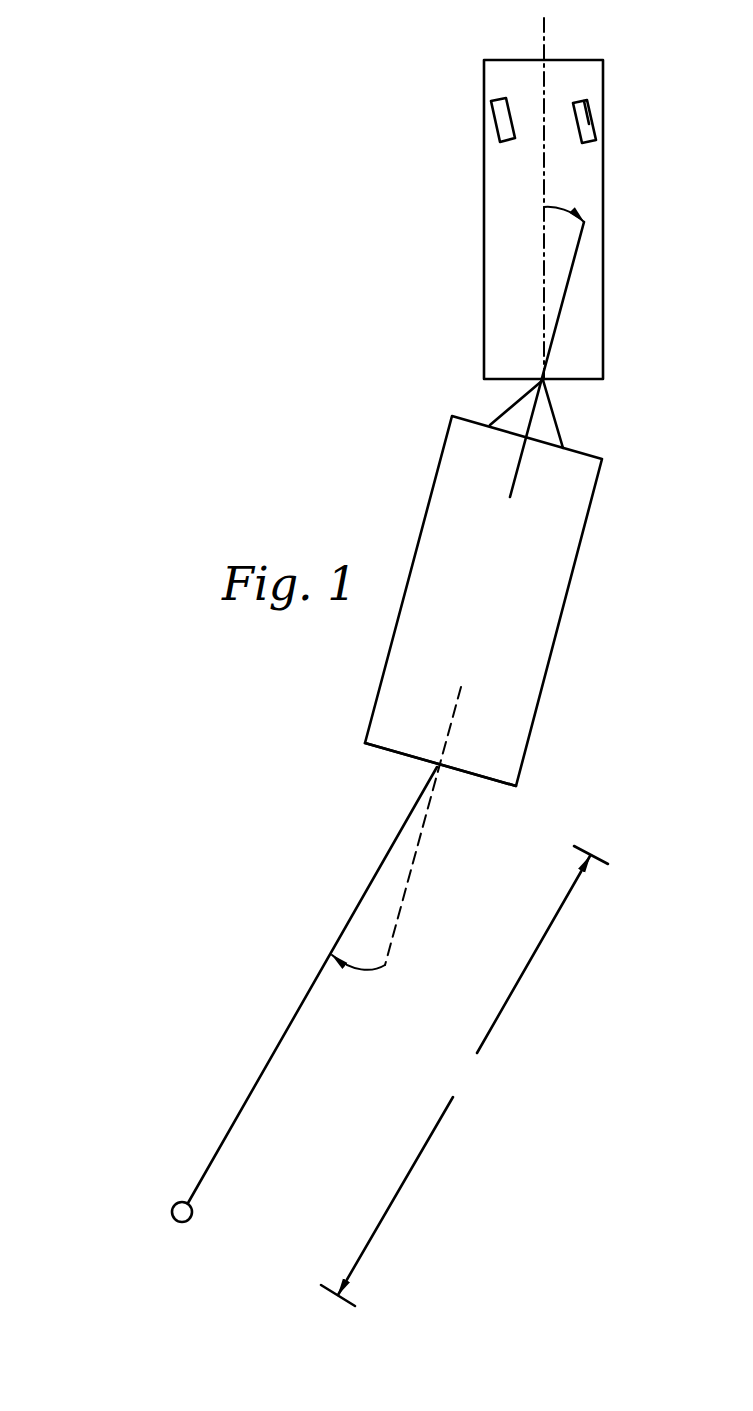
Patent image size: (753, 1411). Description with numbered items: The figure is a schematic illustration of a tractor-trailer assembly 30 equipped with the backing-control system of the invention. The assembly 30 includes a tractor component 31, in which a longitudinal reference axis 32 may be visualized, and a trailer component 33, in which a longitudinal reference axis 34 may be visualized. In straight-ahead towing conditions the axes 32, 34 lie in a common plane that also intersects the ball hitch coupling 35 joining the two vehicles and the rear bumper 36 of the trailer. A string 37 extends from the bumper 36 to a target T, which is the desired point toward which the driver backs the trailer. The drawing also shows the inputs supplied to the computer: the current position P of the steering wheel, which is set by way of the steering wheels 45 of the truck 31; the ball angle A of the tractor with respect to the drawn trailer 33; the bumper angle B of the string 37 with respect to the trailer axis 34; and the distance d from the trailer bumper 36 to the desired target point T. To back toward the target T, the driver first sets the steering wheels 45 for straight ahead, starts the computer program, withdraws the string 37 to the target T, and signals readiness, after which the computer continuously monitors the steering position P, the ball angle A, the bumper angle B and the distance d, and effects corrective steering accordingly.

The tractor-trailer assembly 30 is at (393, 425).
The tractor component 31 is at (603, 276).
The longitudinal reference axis 32 is at (544, 33).
The trailer component 33 is at (560, 622).
The longitudinal reference axis 34 is at (423, 833).
The ball hitch coupling 35 is at (545, 384).
The rear bumper 36 is at (393, 754).
The string 37 is at (278, 1042).
The steering wheels 45 is at (590, 106).
The steering wheel position P is at (482, 108).
The ball angle A is at (557, 240).
The bumper angle B is at (363, 918).
The target T is at (143, 1233).
The distance d is at (464, 1076).